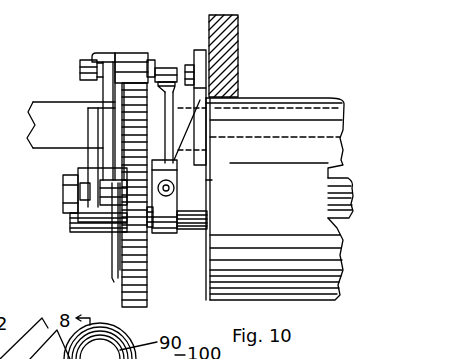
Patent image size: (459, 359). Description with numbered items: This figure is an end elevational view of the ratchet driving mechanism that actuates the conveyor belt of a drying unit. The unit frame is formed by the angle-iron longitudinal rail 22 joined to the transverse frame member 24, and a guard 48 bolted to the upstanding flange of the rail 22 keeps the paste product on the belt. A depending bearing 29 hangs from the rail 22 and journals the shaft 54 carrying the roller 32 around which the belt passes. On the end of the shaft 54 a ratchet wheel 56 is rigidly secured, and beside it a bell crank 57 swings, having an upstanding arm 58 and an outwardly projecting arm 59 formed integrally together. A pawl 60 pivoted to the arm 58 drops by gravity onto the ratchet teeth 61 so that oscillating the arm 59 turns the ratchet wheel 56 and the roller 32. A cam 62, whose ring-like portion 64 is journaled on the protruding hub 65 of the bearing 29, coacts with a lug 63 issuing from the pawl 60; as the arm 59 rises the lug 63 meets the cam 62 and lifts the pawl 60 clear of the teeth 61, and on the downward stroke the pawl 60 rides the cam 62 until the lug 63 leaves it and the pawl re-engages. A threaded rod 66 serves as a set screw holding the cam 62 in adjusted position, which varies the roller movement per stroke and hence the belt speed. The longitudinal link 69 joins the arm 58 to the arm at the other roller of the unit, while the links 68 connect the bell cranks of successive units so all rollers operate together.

The longitudinal rail 22 is at (238, 82).
The transverse frame member 24 is at (35, 118).
The depending bearing 29 is at (197, 184).
The roller 32 is at (318, 118).
The guard 48 is at (228, 31).
The shaft 54 is at (338, 193).
The ratchet wheel 56 is at (122, 290).
The bell crank 57 is at (85, 228).
The upstanding arm 58 is at (112, 97).
The outwardly projecting arm 59 is at (108, 200).
The pawl 60 is at (137, 72).
The ratchet teeth 61 is at (127, 258).
The cam 62 is at (177, 82).
The lug 63 is at (160, 72).
The ring-like portion 64 is at (162, 237).
The hub 65 is at (280, 211).
The threaded rod 66 is at (167, 196).
The link 68 is at (90, 157).
The longitudinal link 69 is at (88, 51).